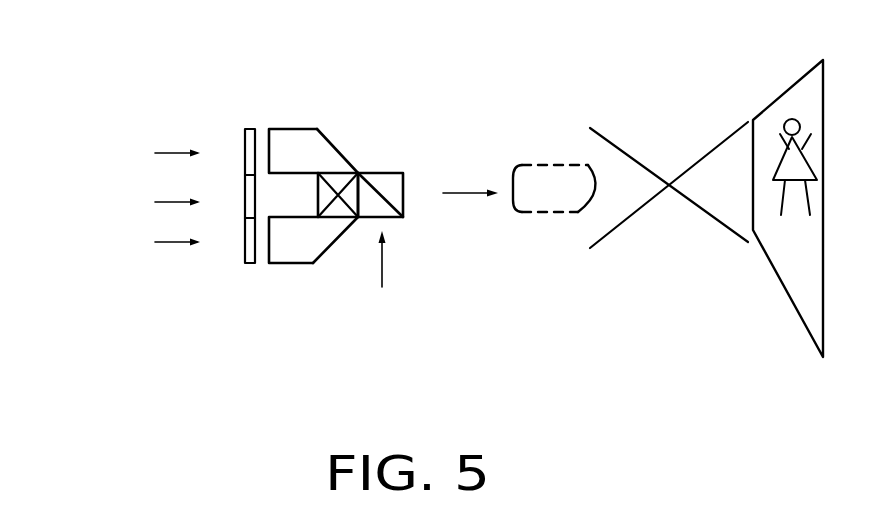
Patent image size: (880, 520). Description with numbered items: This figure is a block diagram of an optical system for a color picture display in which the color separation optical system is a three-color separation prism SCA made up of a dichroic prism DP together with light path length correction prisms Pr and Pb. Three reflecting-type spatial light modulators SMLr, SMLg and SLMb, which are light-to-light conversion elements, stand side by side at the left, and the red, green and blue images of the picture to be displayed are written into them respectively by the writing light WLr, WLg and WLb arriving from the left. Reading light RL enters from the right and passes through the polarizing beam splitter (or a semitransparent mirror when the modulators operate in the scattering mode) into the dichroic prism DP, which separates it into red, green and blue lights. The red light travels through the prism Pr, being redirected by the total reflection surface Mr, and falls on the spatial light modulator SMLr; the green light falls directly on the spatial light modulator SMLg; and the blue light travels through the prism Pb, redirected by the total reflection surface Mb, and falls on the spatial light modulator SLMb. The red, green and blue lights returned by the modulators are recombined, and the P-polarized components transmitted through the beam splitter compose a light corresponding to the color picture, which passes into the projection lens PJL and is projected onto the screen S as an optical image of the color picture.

The writing light for red image WLr is at (132, 149).
The writing light for green image WLg is at (134, 196).
The writing light for blue image WLb is at (134, 244).
The spatial light modulator for red image SMLr is at (244, 143).
The spatial light modulator for green image SMLg is at (244, 207).
The spatial light modulator for blue image SLMb is at (247, 264).
The three-color separation prism SCA is at (262, 276).
The light path length correction prism for red light Pr is at (280, 138).
The light path length correction prism for blue light Pb is at (295, 264).
The total reflection surface for red light Mr is at (332, 143).
The total reflection surface for blue light Mb is at (332, 249).
The dichroic prism DP is at (335, 178).
The reading light RL is at (386, 277).
The projection lens PJL is at (532, 183).
The screen S is at (790, 100).